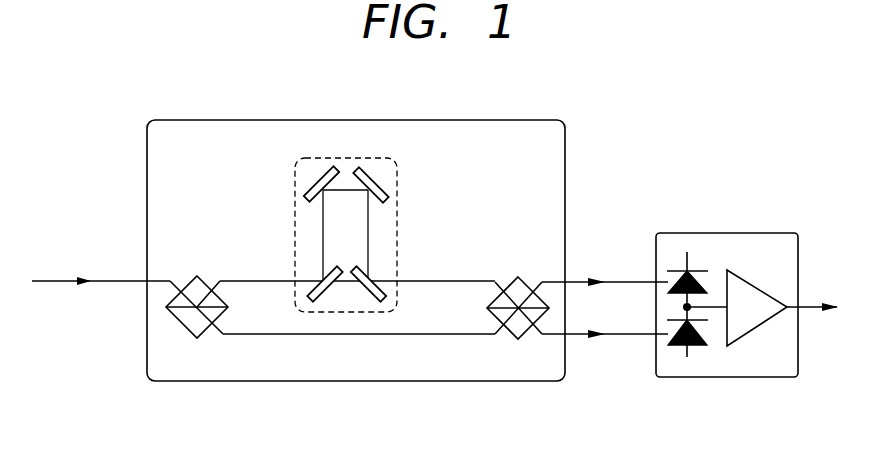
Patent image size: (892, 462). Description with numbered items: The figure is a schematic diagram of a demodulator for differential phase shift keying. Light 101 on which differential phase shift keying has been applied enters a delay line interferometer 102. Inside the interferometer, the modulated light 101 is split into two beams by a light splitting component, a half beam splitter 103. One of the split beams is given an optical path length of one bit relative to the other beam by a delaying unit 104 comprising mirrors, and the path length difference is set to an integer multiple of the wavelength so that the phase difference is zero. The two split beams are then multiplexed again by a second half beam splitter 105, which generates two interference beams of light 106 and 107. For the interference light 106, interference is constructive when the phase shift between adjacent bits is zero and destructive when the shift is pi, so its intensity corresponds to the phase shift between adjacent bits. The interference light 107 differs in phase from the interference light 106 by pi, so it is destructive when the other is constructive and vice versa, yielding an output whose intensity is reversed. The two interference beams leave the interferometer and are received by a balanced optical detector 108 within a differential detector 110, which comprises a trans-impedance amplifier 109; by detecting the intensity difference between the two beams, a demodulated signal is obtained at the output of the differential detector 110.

The light 101 is at (52, 279).
The delay line interferometer 102 is at (566, 160).
The half beam splitter 103 is at (205, 273).
The delaying unit 104 is at (398, 189).
The half beam splitter 105 is at (528, 274).
The interference light 106 is at (577, 280).
The interference light 107 is at (613, 336).
The balanced optical detector 108 is at (690, 258).
The trans-impedance amplifier 109 is at (755, 323).
The differential detector 110 is at (748, 232).